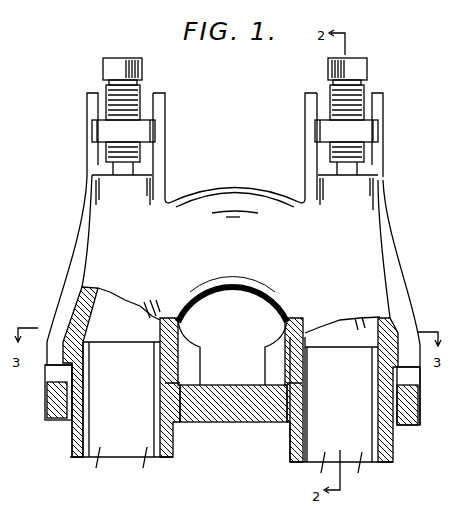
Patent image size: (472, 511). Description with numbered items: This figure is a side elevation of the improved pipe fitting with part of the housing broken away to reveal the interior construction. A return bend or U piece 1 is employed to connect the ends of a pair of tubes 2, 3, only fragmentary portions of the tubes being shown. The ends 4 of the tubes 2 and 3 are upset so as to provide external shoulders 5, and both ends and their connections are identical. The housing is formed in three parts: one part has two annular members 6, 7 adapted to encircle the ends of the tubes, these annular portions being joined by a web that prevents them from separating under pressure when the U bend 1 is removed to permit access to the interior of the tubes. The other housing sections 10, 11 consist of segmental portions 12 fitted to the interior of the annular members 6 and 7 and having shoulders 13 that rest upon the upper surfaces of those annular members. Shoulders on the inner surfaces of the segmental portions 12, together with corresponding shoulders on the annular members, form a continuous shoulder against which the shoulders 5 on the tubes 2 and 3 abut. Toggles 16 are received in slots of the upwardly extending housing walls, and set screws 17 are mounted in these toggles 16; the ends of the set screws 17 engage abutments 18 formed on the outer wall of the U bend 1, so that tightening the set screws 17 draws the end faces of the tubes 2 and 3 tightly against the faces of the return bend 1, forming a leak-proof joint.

The return bend or U piece 1 is at (233, 318).
The tube 2 is at (121, 405).
The tube 3 is at (341, 410).
The tube end 4 is at (72, 373).
The external shoulder 5 is at (47, 366).
The annular member 6 is at (47, 420).
The annular member 7 is at (408, 426).
The housing section 10 is at (90, 160).
The housing section 11 is at (307, 155).
The segmental portion 12 is at (70, 425).
The shoulder 13 is at (268, 380).
The toggle 16 is at (155, 132).
The set screw 17 is at (142, 72).
The abutment 18 is at (107, 188).